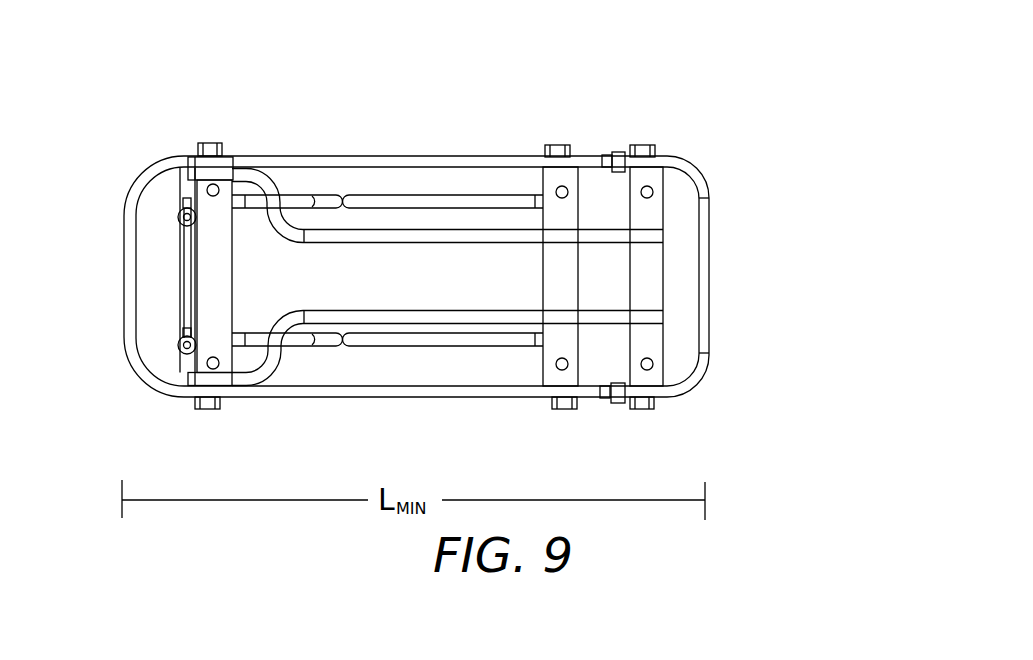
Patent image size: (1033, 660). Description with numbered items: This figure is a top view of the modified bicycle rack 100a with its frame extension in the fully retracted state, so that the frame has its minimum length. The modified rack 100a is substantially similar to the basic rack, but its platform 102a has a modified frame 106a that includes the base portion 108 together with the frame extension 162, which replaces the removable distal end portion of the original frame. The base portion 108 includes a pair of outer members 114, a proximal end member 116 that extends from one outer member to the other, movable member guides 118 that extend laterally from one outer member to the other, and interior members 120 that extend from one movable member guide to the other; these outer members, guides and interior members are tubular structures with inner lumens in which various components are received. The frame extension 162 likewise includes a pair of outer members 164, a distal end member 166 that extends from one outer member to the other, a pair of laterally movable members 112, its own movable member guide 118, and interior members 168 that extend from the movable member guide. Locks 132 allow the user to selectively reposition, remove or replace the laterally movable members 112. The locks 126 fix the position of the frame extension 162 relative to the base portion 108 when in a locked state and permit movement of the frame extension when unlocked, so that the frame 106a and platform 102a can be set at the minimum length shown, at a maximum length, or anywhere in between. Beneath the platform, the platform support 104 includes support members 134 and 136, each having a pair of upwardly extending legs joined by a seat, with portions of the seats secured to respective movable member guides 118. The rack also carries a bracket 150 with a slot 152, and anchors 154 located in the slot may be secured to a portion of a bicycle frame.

The modified rack 100a is at (564, 60).
The platform 102a is at (152, 116).
The platform support 104 is at (403, 322).
The modified frame 106a is at (353, 149).
The base portion 108 is at (121, 293).
The laterally movable members 112 is at (554, 147).
The outer members 114 is at (247, 155).
The proximal end member 116 is at (138, 374).
The movable member guides 118 is at (543, 290).
The interior members 120 is at (329, 230).
The locks 126 is at (611, 406).
The locks 132 is at (217, 367).
The support member 134 is at (294, 352).
The support member 136 is at (500, 350).
The bracket 150 is at (177, 245).
The slot 152 is at (180, 229).
The anchors 154 is at (178, 213).
The frame extension 162 is at (709, 161).
The outer members 164 is at (643, 170).
The distal end member 166 is at (707, 278).
The interior members 168 is at (665, 234).